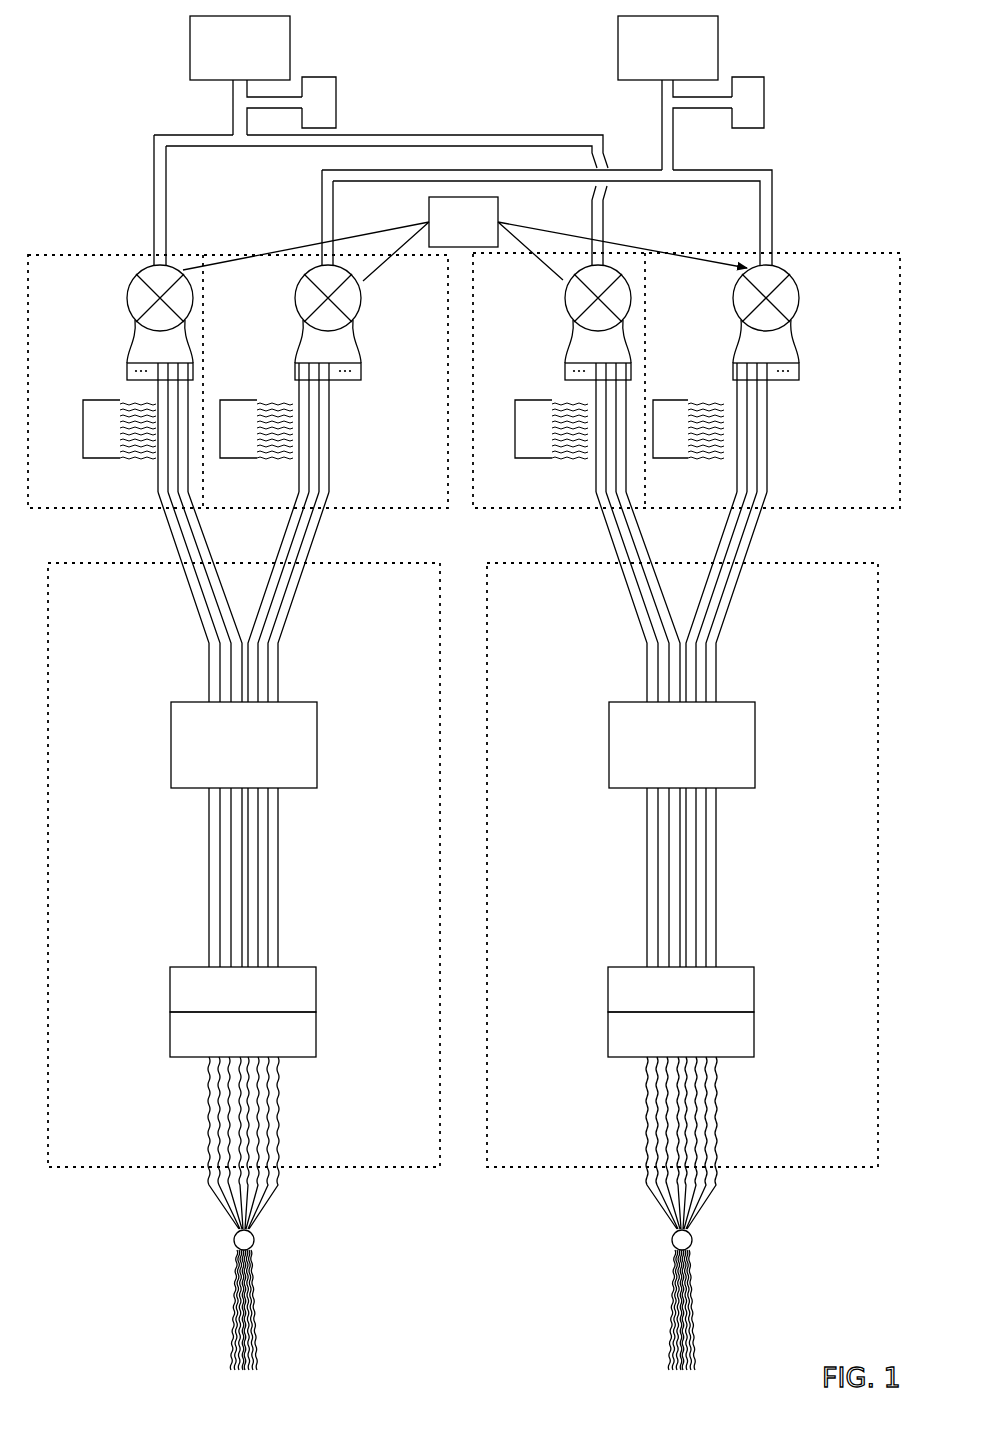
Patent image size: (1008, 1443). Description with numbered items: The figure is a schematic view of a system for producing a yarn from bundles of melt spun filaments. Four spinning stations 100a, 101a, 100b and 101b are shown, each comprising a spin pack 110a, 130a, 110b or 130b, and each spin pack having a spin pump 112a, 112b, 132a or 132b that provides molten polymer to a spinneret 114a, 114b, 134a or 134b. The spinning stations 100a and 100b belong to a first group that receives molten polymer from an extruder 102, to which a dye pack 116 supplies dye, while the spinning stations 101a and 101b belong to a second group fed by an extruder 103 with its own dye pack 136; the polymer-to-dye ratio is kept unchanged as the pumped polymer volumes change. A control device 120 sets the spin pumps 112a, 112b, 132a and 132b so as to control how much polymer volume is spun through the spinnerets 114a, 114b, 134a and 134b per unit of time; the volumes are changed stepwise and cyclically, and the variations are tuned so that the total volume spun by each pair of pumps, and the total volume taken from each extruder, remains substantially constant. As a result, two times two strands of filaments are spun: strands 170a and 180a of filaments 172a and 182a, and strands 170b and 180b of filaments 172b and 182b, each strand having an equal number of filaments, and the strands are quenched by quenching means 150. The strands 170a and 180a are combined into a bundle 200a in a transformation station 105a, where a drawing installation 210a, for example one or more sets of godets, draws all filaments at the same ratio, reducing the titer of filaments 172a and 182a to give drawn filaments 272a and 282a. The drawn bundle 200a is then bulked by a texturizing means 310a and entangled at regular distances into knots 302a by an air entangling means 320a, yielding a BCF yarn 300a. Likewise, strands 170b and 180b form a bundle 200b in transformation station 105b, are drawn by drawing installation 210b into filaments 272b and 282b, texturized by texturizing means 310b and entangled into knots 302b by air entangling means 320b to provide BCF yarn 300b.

The spinning station 100a is at (828, 252).
The spinning station 100b is at (440, 508).
The spinning station 101a is at (487, 508).
The spinning station 101b is at (100, 253).
The extruder 102 is at (651, 59).
The extruder 103 is at (223, 59).
The transformation station 105a is at (777, 1167).
The transformation station 105b is at (325, 1167).
The spin pack 110a is at (735, 334).
The spin pack 110b is at (295, 334).
The spin pump 112a is at (743, 299).
The spin pump 112b is at (312, 299).
The spinneret 114a is at (802, 372).
The spinneret 114b is at (363, 372).
The dye pack 116 is at (751, 90).
The control device 120 is at (478, 235).
The spin pack 130a is at (562, 334).
The spin pack 130b is at (122, 334).
The spin pump 132a is at (572, 299).
The spin pump 132b is at (138, 299).
The spinneret 134a is at (563, 372).
The spinneret 134b is at (127, 372).
The dye pack 136 is at (322, 90).
The quenching means 150 is at (78, 441).
The strand 170a is at (751, 578).
The strand 170b is at (313, 578).
The filaments 172a is at (757, 523).
The filaments 172b is at (287, 524).
The strand 180a is at (610, 580).
The strand 180b is at (172, 580).
The filaments 182a is at (638, 523).
The filaments 182b is at (167, 524).
The bundle 200a is at (734, 917).
The bundle 200b is at (296, 917).
The drawing installation 210a is at (660, 756).
The drawing installation 210b is at (222, 756).
The filaments 272a is at (718, 848).
The filaments 272b is at (280, 848).
The filaments 282a is at (646, 848).
The filaments 282b is at (208, 848).
The BCF yarn 300a is at (706, 1325).
The BCF yarn 300b is at (264, 1325).
The knot 302a is at (669, 1238).
The knot 302b is at (231, 1238).
The texturizing means 310a is at (658, 1004).
The texturizing means 310b is at (220, 1004).
The air entangling means 320a is at (658, 1047).
The air entangling means 320b is at (220, 1047).